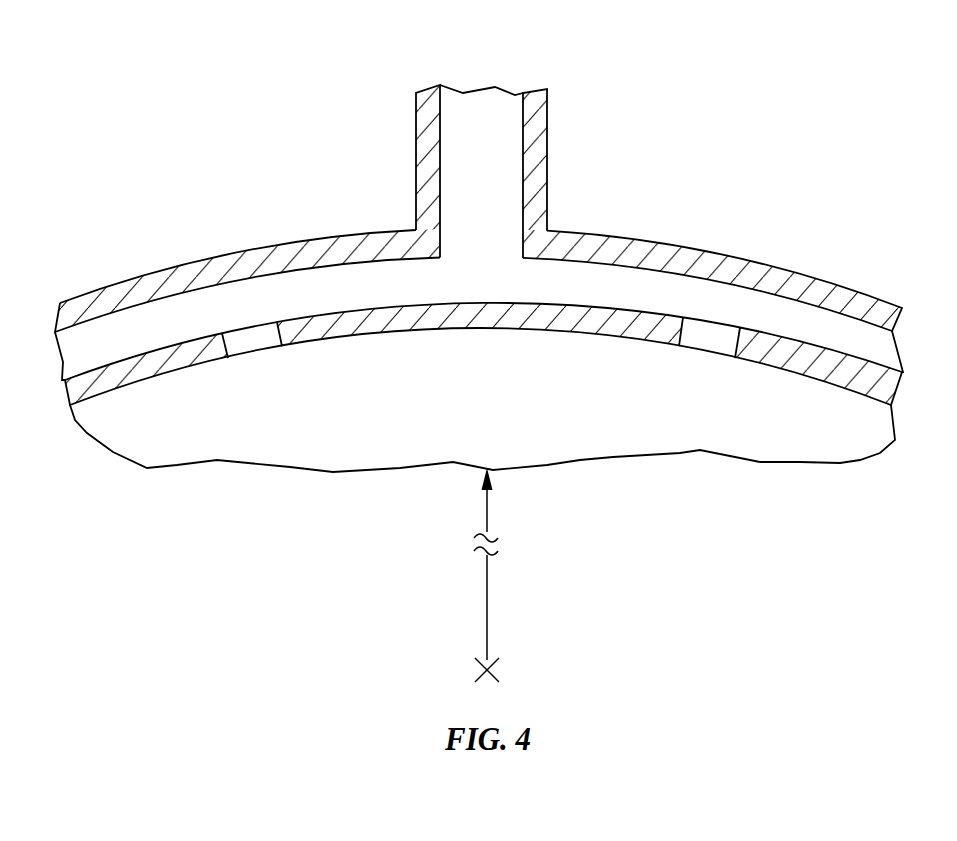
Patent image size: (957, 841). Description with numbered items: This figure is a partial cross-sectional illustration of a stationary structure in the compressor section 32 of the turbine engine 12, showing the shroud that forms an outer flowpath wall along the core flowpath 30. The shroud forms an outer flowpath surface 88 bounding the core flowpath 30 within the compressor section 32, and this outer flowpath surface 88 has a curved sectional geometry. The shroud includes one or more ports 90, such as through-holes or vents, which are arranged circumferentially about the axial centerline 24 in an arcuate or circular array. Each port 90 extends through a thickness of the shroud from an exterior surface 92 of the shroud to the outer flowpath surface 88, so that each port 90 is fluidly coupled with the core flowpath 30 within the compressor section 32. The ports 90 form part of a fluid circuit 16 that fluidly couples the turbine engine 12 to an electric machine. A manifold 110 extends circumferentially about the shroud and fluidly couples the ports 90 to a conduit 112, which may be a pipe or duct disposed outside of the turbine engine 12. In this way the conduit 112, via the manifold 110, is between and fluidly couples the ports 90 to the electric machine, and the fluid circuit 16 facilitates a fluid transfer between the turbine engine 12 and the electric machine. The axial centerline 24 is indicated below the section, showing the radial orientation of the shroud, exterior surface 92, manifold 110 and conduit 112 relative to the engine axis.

The turbine engine 12 is at (480, 349).
The fluid circuit 16 is at (541, 137).
The conduit 112 is at (548, 130).
The compressor section 32 is at (480, 174).
The manifold 110 is at (830, 283).
The exterior surface 92 is at (483, 348).
The outer flowpath surface 88 is at (622, 340).
The ports 90 is at (255, 350).
The core flowpath 30 is at (497, 431).
The axial centerline 24 is at (497, 670).